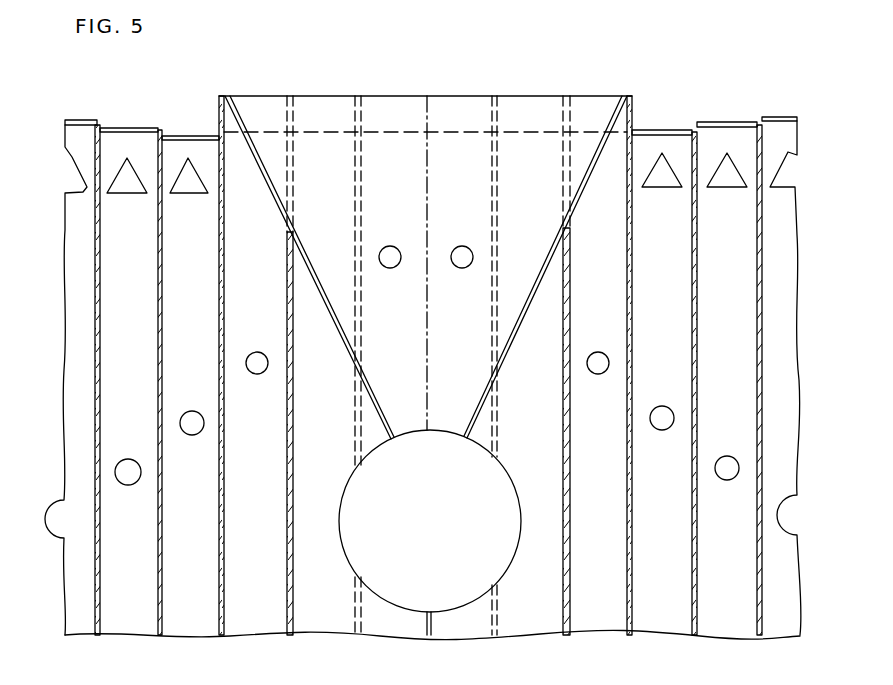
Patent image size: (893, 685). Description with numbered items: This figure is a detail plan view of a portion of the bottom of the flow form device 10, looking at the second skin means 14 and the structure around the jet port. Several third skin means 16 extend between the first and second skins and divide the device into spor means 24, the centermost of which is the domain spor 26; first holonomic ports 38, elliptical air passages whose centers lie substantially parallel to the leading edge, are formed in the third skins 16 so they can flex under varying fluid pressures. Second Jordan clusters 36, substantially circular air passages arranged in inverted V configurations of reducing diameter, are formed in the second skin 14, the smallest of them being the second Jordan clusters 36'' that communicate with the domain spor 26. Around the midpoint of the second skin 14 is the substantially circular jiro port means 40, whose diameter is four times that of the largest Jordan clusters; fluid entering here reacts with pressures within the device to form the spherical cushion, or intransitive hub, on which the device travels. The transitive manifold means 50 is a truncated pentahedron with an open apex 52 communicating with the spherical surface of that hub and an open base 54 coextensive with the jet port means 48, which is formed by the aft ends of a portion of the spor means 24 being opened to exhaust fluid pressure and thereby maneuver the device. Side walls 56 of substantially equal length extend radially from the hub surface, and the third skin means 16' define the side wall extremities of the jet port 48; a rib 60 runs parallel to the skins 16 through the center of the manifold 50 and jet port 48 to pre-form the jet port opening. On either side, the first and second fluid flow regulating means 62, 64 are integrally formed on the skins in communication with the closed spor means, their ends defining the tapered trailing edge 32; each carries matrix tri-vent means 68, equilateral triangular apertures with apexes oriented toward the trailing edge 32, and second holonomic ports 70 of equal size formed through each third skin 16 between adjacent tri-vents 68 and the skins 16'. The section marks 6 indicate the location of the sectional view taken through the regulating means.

The flow form device 10 is at (352, 80).
The second skin means 14 is at (138, 374).
The third skin means 16 is at (459, 365).
The third skin means 16' is at (425, 262).
The spor means 24 is at (135, 283).
The domain spor 26 is at (540, 601).
The trailing edge 32 is at (127, 128).
The second Jordan clusters 36 is at (424, 418).
The second Jordan clusters 36'' is at (426, 279).
The first holonomic ports 38 is at (157, 517).
The jiro port means 40 is at (349, 474).
The jet port means 48 is at (397, 120).
The transitive manifold means 50 is at (393, 378).
The open apex 52 is at (443, 429).
The open base 54 is at (343, 138).
The side walls 56 is at (333, 282).
The rib 60 is at (430, 177).
The first fluid flow regulating means 62 is at (677, 110).
The second fluid flow regulating means 64 is at (79, 110).
The matrix tri-vent means 68 is at (72, 170).
The second holonomic ports 70 is at (170, 174).
The section line 6 is at (277, 498).